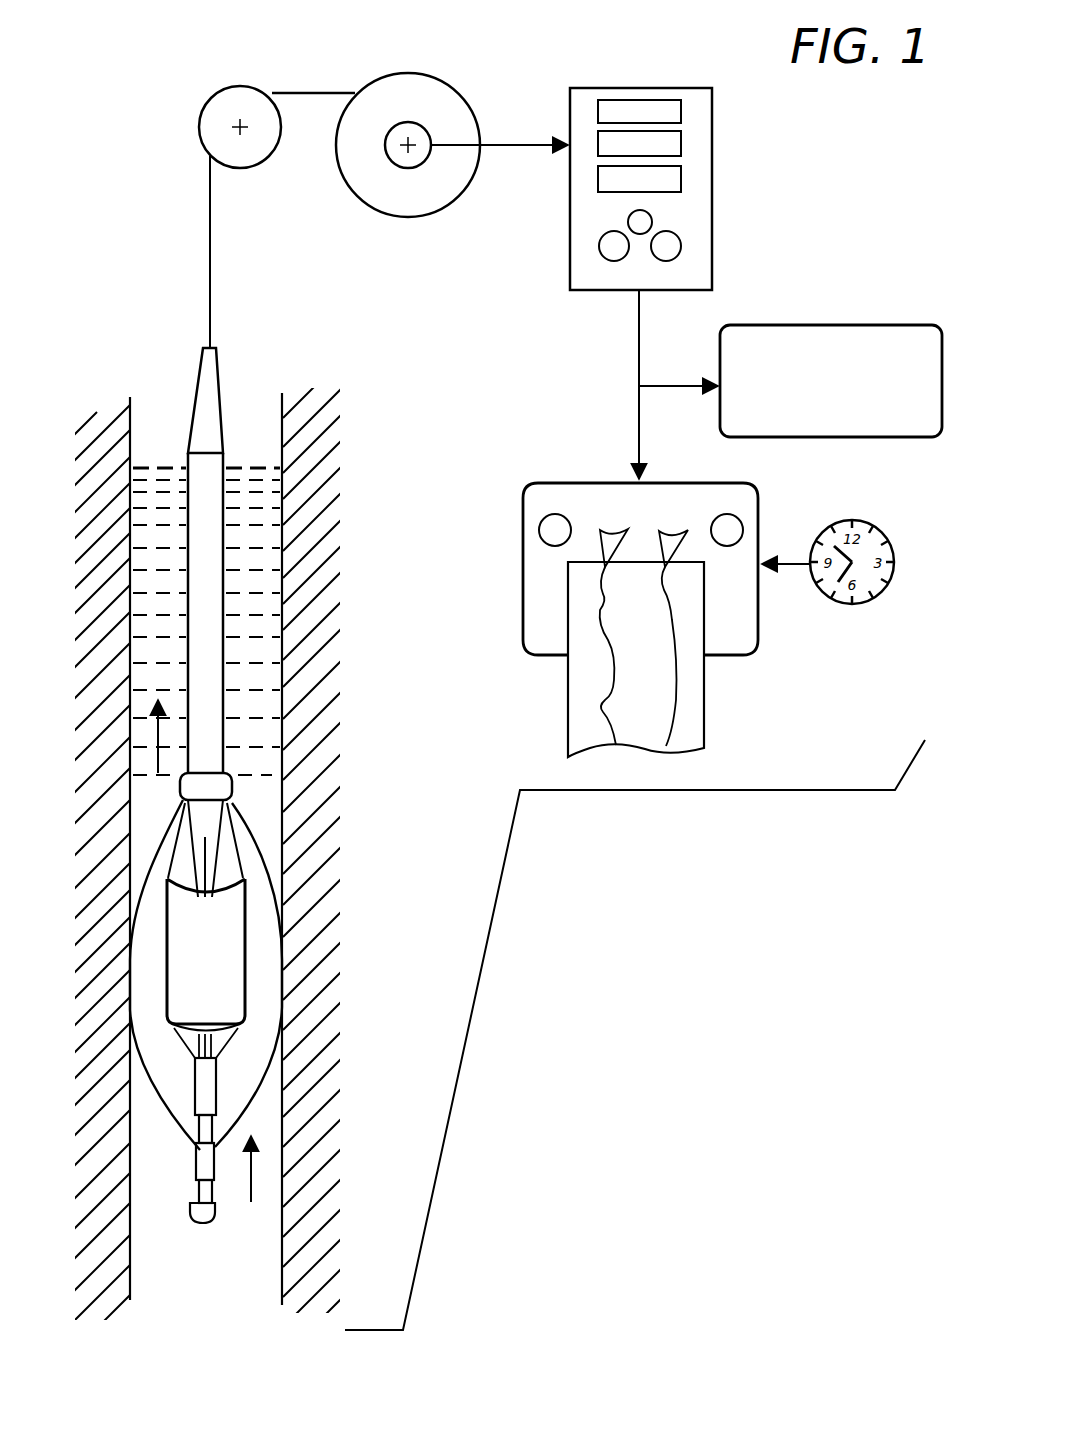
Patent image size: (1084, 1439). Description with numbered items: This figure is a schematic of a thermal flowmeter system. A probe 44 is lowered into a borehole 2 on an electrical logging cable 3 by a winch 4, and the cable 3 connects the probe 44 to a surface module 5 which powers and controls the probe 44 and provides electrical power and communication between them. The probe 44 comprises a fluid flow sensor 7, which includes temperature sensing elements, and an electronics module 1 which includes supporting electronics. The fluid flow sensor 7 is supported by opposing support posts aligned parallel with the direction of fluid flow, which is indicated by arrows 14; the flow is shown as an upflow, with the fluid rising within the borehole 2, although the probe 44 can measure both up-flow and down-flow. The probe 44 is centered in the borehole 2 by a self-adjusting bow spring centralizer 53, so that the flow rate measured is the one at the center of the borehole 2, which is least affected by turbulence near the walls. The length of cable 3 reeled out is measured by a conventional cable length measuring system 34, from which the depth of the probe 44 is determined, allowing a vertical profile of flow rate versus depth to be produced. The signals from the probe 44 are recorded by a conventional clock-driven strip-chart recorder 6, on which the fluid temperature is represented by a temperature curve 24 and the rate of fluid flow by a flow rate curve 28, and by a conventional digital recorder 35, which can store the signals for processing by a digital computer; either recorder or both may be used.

The electronics module 1 is at (210, 588).
The borehole 2 is at (262, 616).
The electrical logging cable 3 is at (212, 298).
The winch 4 is at (408, 73).
The surface module 5 is at (712, 147).
The strip-chart recorder 6 is at (558, 483).
The fluid flow sensor 7 is at (225, 958).
The arrows indicating direction of fluid flow 14 is at (158, 745).
The temperature curve 24 is at (680, 699).
The flow rate curve 28 is at (603, 645).
The cable length measuring system 34 is at (246, 86).
The digital recorder 35 is at (828, 325).
The probe 44 is at (322, 830).
The self-adjusting bow spring centralizer 53 is at (262, 851).